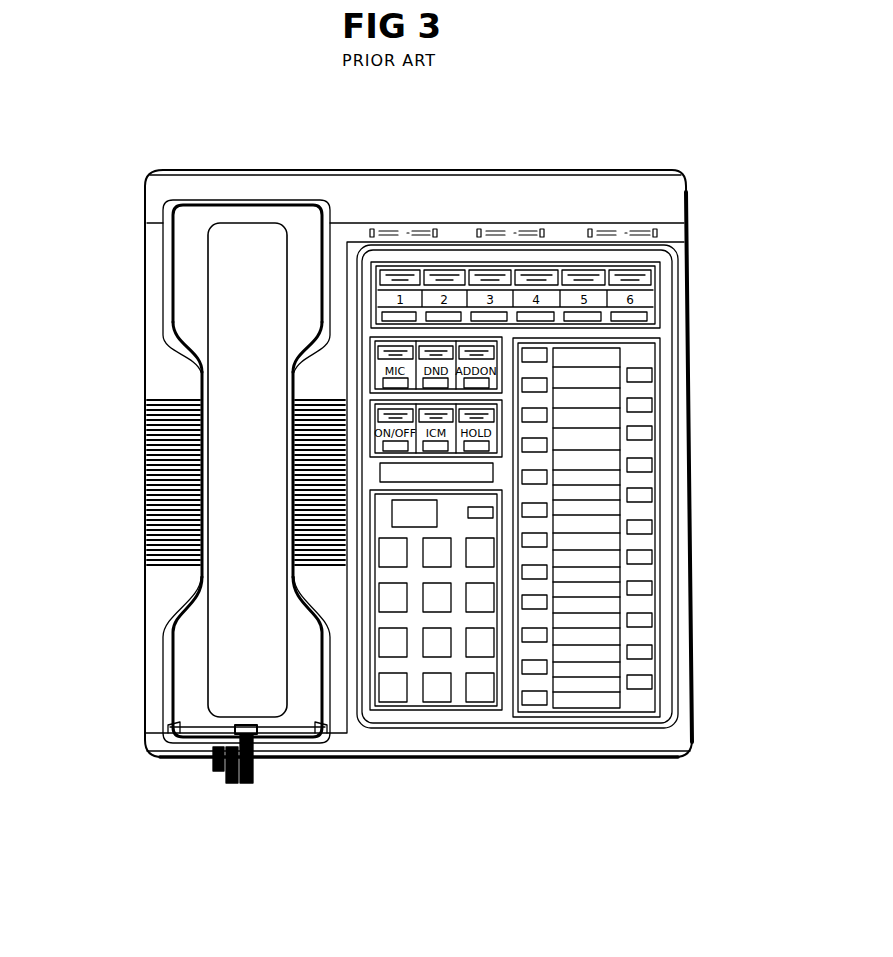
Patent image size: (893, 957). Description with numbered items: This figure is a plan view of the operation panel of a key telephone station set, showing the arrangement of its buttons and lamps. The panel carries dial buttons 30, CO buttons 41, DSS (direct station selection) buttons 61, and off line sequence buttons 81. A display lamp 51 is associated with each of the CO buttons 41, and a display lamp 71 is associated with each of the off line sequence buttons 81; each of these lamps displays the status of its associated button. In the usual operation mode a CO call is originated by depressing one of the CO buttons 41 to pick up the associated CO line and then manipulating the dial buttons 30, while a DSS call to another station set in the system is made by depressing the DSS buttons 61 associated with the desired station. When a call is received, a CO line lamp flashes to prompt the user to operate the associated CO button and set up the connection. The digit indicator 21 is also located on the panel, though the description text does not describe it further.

The digit indicator 21 is at (392, 512).
The dial buttons 30 is at (299, 640).
The CO buttons 41 is at (645, 320).
The display lamp 51 is at (652, 278).
The DSS (direct station selection) buttons 61 is at (652, 498).
The display lamp 71 is at (378, 357).
The off line sequence buttons 81 is at (381, 382).